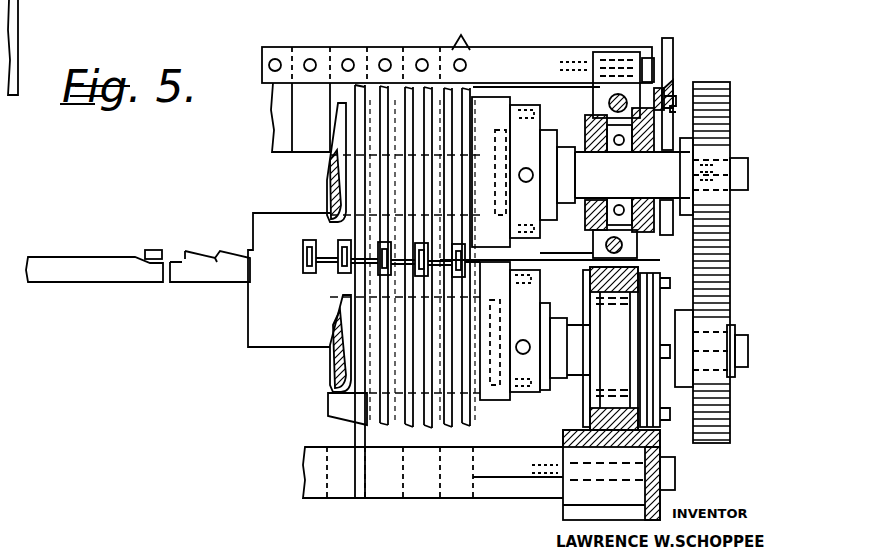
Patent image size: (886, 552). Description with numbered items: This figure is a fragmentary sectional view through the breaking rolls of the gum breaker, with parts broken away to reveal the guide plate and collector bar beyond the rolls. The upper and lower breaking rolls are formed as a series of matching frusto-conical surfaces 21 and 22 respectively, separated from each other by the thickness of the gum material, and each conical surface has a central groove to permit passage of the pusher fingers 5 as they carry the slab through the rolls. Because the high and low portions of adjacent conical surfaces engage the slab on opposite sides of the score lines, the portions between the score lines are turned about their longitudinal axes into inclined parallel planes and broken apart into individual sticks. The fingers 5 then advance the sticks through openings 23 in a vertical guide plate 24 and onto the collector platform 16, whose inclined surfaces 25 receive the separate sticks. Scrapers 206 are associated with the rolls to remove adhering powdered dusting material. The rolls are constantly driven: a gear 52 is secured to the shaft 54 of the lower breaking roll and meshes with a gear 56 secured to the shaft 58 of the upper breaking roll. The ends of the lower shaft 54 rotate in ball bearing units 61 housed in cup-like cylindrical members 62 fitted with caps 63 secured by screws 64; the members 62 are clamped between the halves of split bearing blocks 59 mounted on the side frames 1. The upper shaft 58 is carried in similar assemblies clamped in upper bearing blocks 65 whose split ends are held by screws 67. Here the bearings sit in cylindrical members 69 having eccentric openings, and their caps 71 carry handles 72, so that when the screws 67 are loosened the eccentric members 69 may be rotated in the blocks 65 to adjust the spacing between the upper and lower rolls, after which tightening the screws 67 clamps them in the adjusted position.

The side frames 1 is at (665, 500).
The pusher fingers 5 is at (420, 257).
The collector platform 16 is at (96, 283).
The frusto-conical surfaces of upper breaking roll 21 is at (461, 47).
The frusto-conical surfaces of lower breaking roll 22 is at (470, 430).
The openings 23 is at (299, 277).
The vertical guide plate 24 is at (262, 224).
The inclined surfaces 25 is at (210, 265).
The gear 52 is at (728, 402).
The shaft of lower breaking roll 54 is at (672, 338).
The gear 56 is at (718, 110).
The shaft of upper breaking roll 58 is at (665, 170).
The split bearing blocks 59 is at (595, 420).
The ball bearing units 61 is at (593, 145).
The cup-like cylindrical members 62 is at (600, 305).
The caps 63 is at (640, 336).
The screws 64 is at (652, 388).
The upper bearing blocks 65 is at (601, 100).
The screws 67 is at (618, 98).
The eccentric cylindrical members 69 is at (658, 90).
The caps 71 is at (666, 95).
The handles 72 is at (668, 50).
The scrapers 206 is at (305, 147).